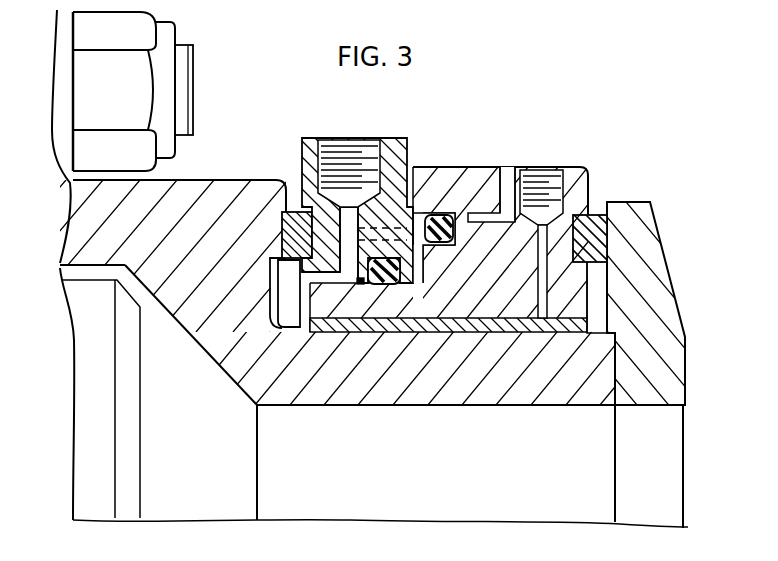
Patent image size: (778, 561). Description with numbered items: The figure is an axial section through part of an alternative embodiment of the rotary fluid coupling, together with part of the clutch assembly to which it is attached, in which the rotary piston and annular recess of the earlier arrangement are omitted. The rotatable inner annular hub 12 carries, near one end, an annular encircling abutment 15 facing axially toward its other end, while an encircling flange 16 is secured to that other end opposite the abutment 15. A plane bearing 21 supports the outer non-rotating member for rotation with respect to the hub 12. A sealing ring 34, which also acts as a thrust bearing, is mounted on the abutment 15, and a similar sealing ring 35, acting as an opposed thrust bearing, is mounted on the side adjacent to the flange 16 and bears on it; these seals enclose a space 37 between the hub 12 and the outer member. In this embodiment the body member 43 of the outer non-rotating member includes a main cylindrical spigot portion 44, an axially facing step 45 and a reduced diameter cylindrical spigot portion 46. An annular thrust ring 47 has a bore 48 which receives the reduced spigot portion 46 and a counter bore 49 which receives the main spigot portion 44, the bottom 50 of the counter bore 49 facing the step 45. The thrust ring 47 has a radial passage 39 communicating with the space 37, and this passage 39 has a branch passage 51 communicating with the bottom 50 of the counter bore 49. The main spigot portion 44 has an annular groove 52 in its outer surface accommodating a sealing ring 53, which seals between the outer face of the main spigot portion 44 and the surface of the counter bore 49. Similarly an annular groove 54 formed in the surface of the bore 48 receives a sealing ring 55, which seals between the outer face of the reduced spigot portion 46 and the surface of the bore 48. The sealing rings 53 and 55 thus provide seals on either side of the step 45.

The inner annular hub 12 is at (565, 380).
The annular encircling abutment 15 is at (187, 192).
The encircling flange 16 is at (622, 215).
The plane bearing 21 is at (518, 322).
The sealing ring 34 is at (288, 210).
The sealing ring 35 is at (593, 214).
The space 37 is at (232, 360).
The second passage 39 is at (327, 138).
The body member 43 is at (582, 167).
The main cylindrical spigot portion 44 is at (538, 165).
The axially facing step 45 is at (418, 262).
The reduced diameter cylindrical spigot portion 46 is at (293, 325).
The annular thrust ring 47 is at (450, 212).
The bore 48 is at (358, 284).
The counter bore 49 is at (514, 168).
The bottom of the counter bore 50 is at (458, 158).
The branch passage 51 is at (382, 228).
The annular groove 52 is at (453, 243).
The sealing ring 53 is at (500, 167).
The annular groove 54 is at (399, 272).
The sealing ring 55 is at (390, 285).